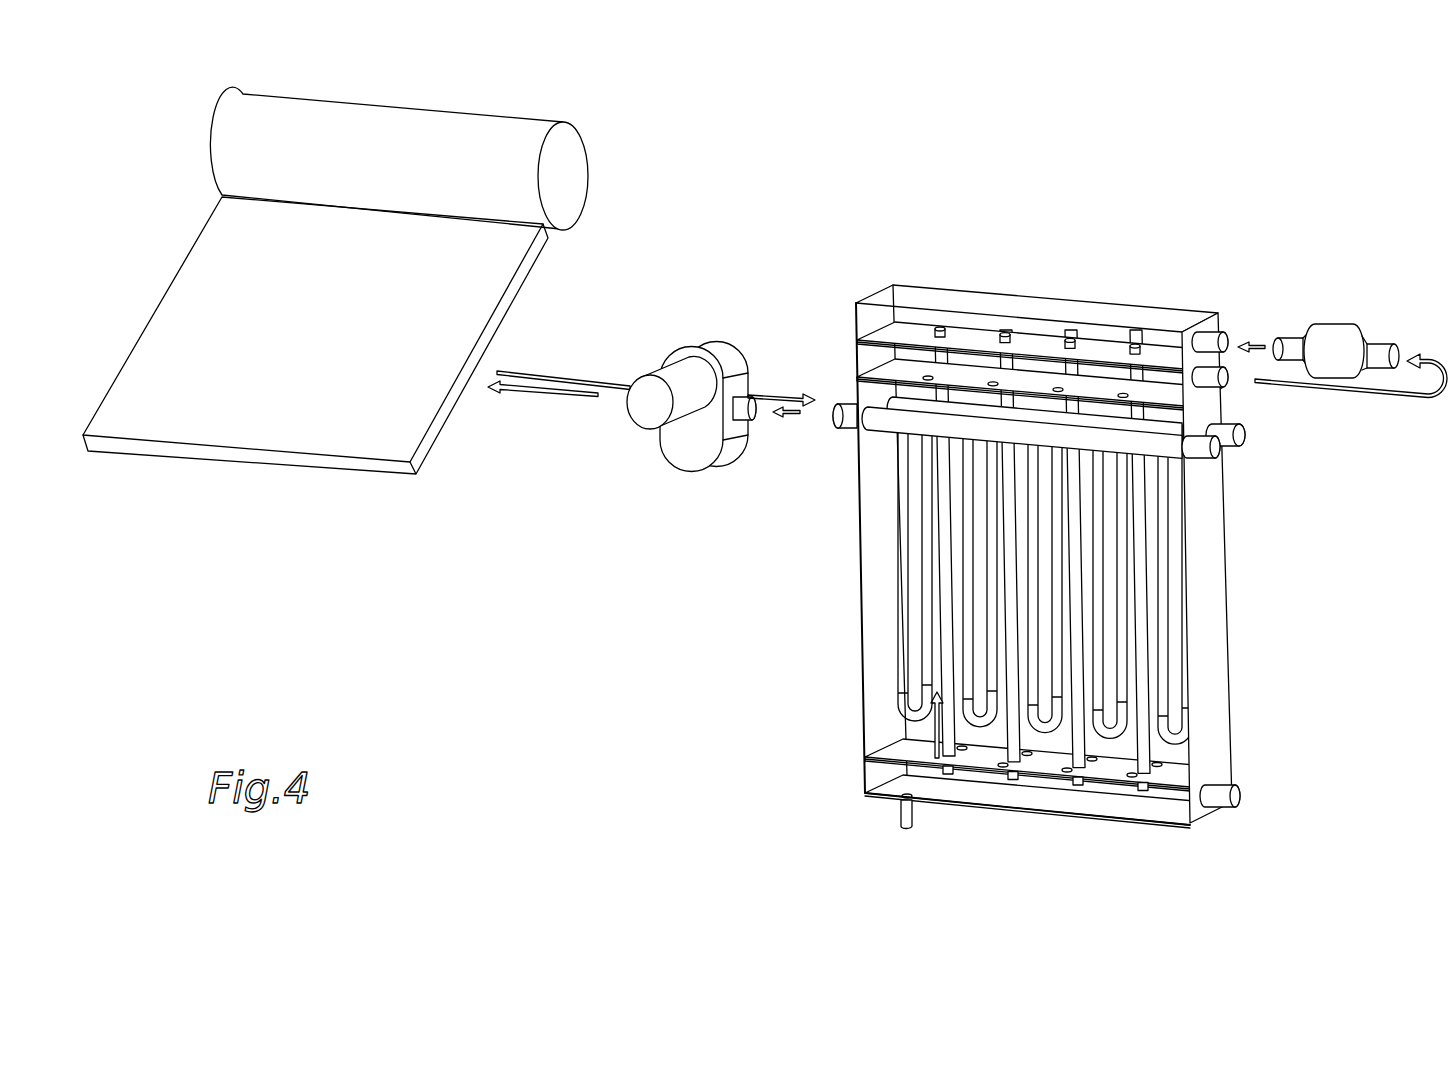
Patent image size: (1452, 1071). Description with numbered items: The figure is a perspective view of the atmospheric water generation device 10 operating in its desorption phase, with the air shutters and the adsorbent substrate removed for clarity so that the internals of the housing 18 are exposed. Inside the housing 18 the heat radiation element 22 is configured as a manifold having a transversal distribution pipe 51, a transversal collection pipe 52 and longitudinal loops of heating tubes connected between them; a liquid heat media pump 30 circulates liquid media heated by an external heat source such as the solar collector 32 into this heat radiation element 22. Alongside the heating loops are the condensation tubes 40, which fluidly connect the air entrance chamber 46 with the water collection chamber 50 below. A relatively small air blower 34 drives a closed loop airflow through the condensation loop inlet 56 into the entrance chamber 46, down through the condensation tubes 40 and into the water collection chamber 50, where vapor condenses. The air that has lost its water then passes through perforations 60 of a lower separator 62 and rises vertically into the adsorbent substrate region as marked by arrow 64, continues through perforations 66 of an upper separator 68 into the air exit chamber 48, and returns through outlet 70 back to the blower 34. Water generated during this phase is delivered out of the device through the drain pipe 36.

The device for atmospheric water generation 10 is at (1043, 500).
The housing 18 is at (882, 292).
The heat radiation element 22 is at (900, 557).
The liquid heat media pump 30 is at (722, 344).
The solar collector 32 is at (538, 126).
The air blower 34 is at (1337, 323).
The drain pipe 36 is at (908, 826).
The condensation tubes 40 is at (947, 655).
The air entrance chamber 46 is at (867, 323).
The air exit chamber 48 is at (867, 363).
The water collection chamber 50 is at (878, 777).
The transversal distribution pipe 51 is at (1223, 447).
The transversal collection pipe 52 is at (845, 420).
The condensation loop inlet 56 is at (1223, 332).
The perforations of lower separator 60 is at (1160, 758).
The lower separator 62 is at (1170, 775).
The arrow 64 is at (935, 730).
The perforations of upper separator 66 is at (1087, 373).
The upper separator 68 is at (1102, 380).
The outlet 70 is at (1223, 388).